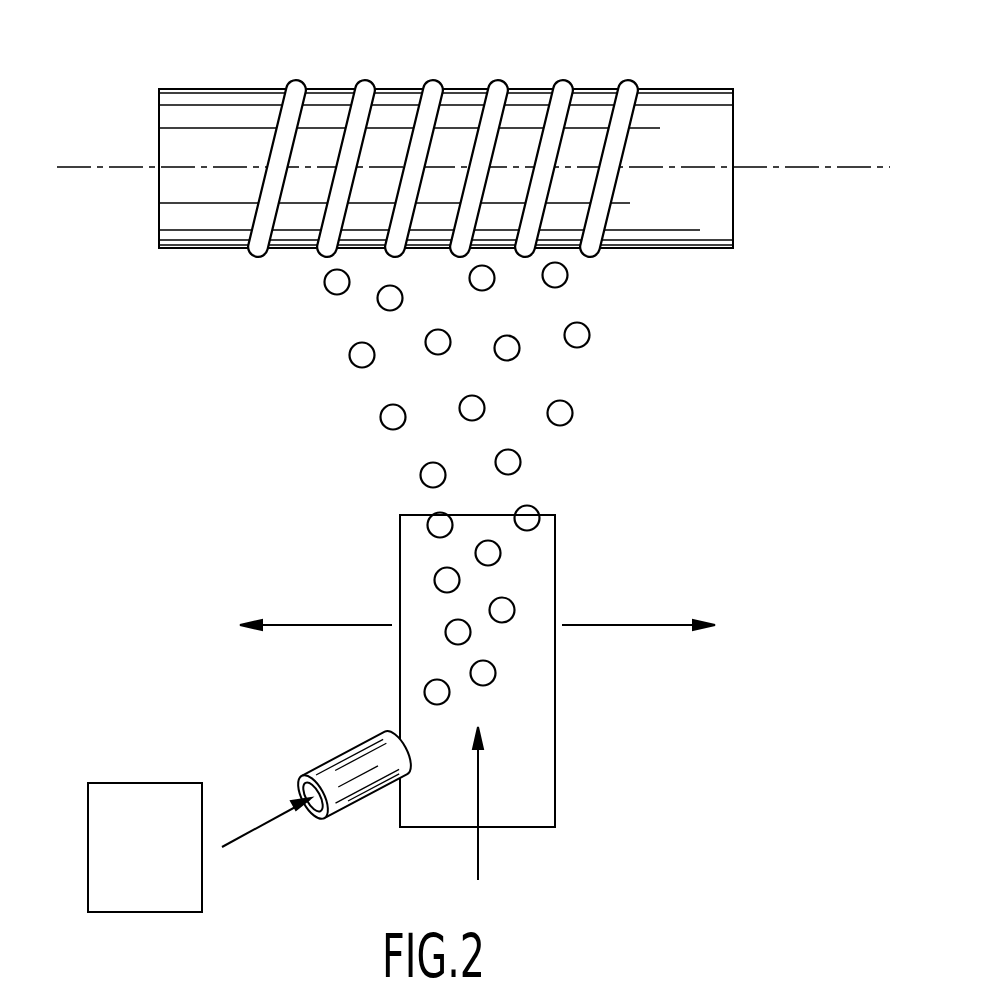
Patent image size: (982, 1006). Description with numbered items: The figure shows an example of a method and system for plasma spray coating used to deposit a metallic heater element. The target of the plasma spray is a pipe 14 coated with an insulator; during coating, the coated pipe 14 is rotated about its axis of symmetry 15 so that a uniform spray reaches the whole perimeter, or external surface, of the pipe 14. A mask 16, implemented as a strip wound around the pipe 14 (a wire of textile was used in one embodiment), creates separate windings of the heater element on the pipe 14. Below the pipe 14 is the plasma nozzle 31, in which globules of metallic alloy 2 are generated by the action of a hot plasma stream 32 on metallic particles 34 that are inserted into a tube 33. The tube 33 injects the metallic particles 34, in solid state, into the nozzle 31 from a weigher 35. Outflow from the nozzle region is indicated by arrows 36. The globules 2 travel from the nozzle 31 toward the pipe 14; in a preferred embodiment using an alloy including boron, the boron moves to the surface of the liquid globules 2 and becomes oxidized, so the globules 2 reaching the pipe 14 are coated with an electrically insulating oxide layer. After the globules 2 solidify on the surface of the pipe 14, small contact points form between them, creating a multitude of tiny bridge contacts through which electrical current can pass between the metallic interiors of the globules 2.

The globules of metallic alloy 2 is at (393, 417).
The target pipe 14 is at (218, 88).
The axis of symmetry 15 is at (788, 167).
The mask 16 is at (365, 81).
The plasma nozzle 31 is at (555, 713).
The hot plasma stream 32 is at (479, 855).
The tube 33 is at (337, 748).
The metallic particles 34 is at (253, 831).
The weigher 35 is at (133, 912).
The outflow arrows 36 is at (330, 625).